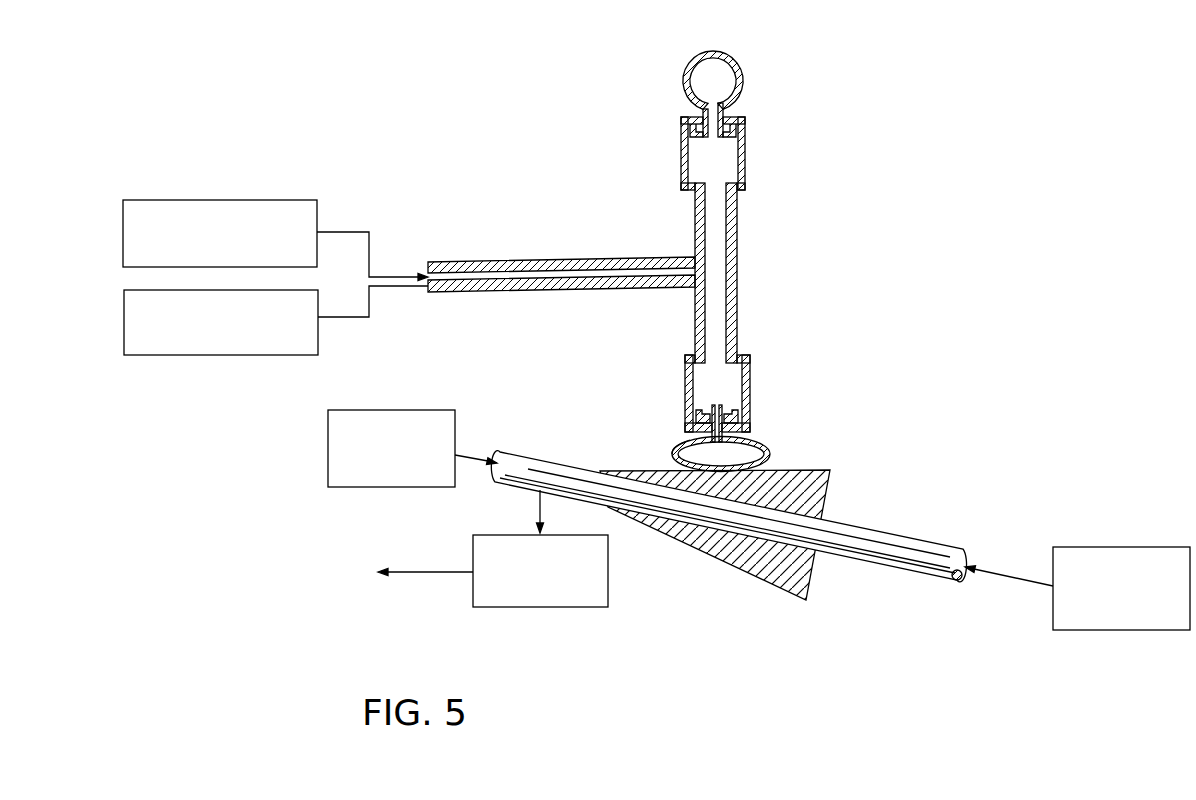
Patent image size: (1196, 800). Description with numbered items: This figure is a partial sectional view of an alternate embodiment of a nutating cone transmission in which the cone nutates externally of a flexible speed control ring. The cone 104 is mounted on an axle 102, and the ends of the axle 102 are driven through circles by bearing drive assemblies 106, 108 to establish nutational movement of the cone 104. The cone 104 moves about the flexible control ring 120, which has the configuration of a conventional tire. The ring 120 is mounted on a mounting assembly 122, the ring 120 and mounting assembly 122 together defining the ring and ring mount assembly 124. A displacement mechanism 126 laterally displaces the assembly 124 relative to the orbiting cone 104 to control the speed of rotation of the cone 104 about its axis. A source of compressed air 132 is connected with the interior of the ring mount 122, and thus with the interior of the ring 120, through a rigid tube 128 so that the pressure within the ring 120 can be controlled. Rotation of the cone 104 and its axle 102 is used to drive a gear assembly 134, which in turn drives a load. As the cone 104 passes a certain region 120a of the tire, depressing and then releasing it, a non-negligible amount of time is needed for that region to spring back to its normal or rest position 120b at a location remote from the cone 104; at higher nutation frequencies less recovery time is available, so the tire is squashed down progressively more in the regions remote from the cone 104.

The axle 102 is at (905, 547).
The cone 104 is at (835, 470).
The bearing drive assembly 106 is at (407, 410).
The bearing drive assembly 108 is at (1155, 547).
The flexible control ring 120 is at (777, 440).
The region of the tire 120a is at (670, 445).
The normal or rest position 120b is at (745, 72).
The mounting assembly 122 is at (682, 135).
The ring and ring mount assembly 124 is at (757, 338).
The displacement mechanism 126 is at (125, 315).
The rigid tube 128 is at (545, 261).
The source of compressed air 132 is at (124, 232).
The gear assembly 134 is at (472, 540).